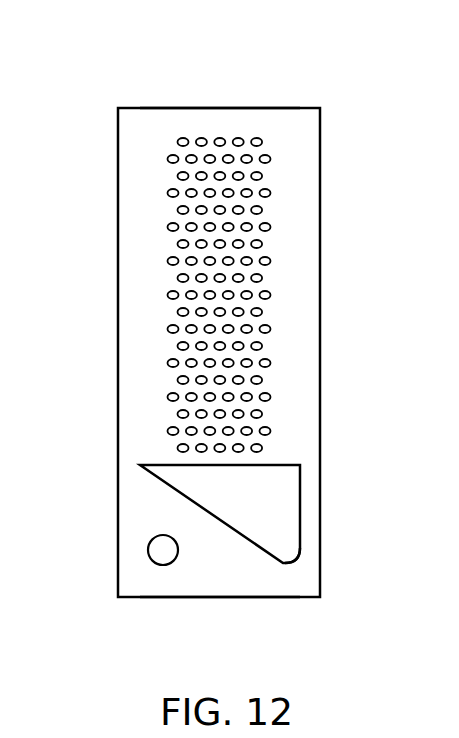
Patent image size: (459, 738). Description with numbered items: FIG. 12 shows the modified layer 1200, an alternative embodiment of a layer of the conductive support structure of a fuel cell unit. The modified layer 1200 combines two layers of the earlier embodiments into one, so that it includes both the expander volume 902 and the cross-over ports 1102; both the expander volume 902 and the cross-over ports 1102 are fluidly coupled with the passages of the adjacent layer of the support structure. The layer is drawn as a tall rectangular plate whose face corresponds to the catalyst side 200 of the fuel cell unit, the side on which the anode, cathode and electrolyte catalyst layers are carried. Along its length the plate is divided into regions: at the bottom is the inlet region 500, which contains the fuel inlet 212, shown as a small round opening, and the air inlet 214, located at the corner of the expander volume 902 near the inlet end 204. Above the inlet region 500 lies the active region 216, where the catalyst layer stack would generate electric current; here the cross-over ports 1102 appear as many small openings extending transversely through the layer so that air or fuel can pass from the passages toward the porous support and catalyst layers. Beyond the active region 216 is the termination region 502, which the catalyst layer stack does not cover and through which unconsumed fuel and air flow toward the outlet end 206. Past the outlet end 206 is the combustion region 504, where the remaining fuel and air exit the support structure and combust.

The modified layer 1200 is at (302, 58).
The catalyst side 200 is at (305, 258).
The outlet end 206 is at (220, 100).
The inlet end 204 is at (227, 605).
The active region 216 is at (200, 300).
The cross-over ports 1102 is at (248, 226).
The inlet region 500 is at (100, 462).
The termination region 502 is at (100, 110).
The combustion region 504 is at (100, 73).
The expander volume 902 is at (283, 512).
The fuel inlet 212 is at (163, 552).
The air inlet 214 is at (285, 555).